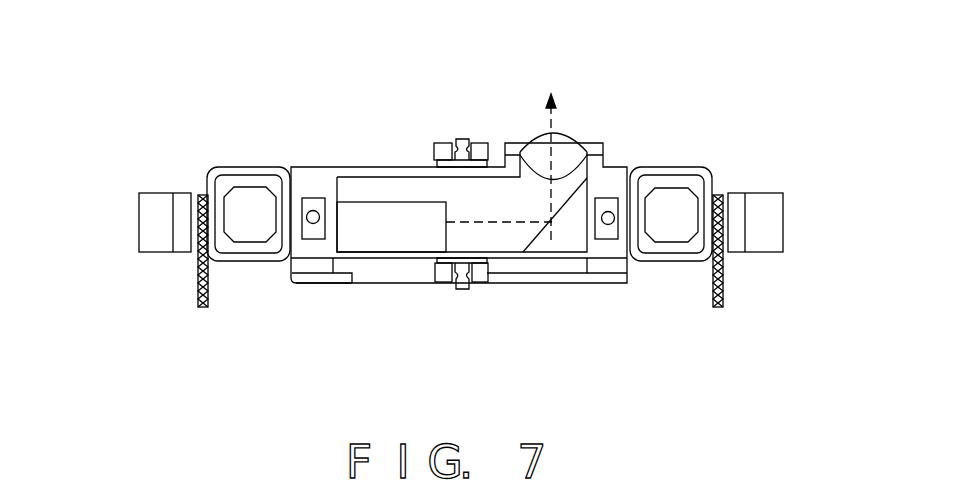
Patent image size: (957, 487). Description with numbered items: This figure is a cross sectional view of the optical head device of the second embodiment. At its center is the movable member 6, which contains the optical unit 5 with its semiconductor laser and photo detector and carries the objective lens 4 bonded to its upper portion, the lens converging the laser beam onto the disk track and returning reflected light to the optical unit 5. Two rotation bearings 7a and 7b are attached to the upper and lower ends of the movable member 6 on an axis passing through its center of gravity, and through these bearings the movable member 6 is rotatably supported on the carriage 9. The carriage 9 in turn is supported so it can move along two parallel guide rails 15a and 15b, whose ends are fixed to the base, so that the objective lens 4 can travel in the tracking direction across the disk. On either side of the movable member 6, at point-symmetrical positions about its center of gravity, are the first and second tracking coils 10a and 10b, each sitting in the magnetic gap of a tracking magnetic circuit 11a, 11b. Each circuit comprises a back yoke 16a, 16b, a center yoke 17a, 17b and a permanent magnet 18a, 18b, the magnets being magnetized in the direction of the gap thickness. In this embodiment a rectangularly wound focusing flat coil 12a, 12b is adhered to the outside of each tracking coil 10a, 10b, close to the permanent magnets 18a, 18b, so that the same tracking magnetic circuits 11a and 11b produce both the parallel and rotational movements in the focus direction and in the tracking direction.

The objective lens 4 is at (568, 136).
The optical unit 5 is at (381, 242).
The movable member 6 is at (387, 167).
The rotation bearing 7a is at (462, 139).
The rotation bearing 7b is at (461, 290).
The carriage 9 is at (320, 284).
The first tracking coil 10a is at (689, 181).
The second tracking coil 10b is at (252, 173).
The tracking magnetic circuit 11a is at (807, 205).
The tracking magnetic circuit 11b is at (132, 201).
The focusing flat coil 12a is at (722, 305).
The focusing flat coil 12b is at (209, 305).
The guide rail 15a is at (608, 226).
The guide rail 15b is at (313, 211).
The back yoke 16a is at (782, 243).
The back yoke 16b is at (143, 232).
The center yoke 17a is at (683, 197).
The center yoke 17b is at (242, 202).
The permanent magnet 18a is at (738, 202).
The permanent magnet 18b is at (180, 242).